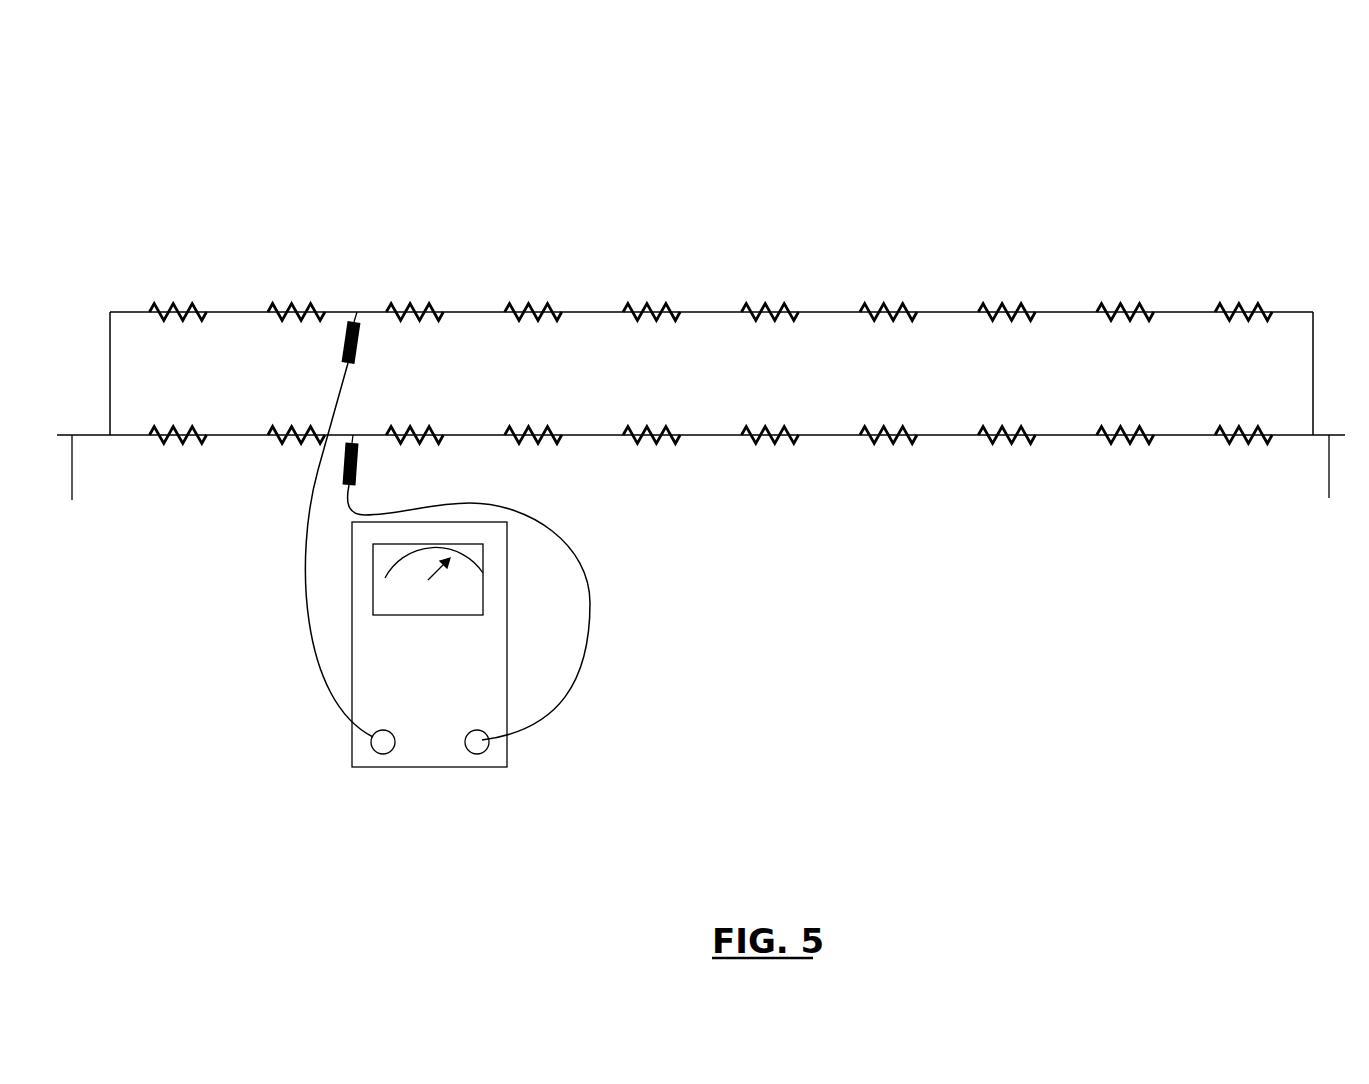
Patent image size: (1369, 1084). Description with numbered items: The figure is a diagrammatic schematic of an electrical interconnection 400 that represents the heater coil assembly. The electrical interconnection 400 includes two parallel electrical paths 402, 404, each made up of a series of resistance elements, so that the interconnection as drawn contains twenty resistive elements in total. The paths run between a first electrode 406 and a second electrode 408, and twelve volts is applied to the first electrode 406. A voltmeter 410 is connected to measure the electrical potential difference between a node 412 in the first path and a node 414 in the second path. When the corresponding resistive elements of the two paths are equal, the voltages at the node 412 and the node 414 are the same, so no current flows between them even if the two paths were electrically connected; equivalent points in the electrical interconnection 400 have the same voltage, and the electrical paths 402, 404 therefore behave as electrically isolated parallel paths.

The electrical interconnection 400 is at (558, 108).
The electrical path 402 is at (465, 312).
The electrical path 404 is at (825, 435).
The first electrode 406 is at (61, 458).
The second electrode 408 is at (1327, 460).
The voltmeter 410 is at (355, 740).
The node 412 is at (355, 312).
The node 414 is at (353, 435).